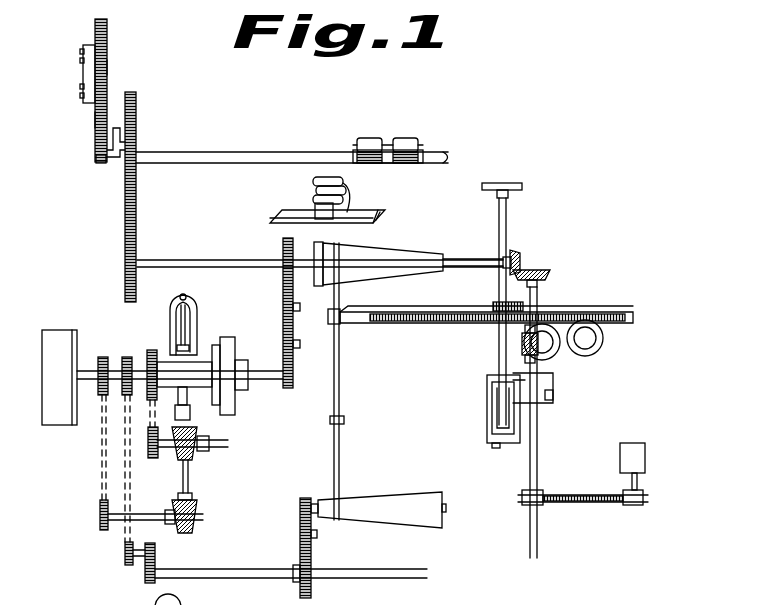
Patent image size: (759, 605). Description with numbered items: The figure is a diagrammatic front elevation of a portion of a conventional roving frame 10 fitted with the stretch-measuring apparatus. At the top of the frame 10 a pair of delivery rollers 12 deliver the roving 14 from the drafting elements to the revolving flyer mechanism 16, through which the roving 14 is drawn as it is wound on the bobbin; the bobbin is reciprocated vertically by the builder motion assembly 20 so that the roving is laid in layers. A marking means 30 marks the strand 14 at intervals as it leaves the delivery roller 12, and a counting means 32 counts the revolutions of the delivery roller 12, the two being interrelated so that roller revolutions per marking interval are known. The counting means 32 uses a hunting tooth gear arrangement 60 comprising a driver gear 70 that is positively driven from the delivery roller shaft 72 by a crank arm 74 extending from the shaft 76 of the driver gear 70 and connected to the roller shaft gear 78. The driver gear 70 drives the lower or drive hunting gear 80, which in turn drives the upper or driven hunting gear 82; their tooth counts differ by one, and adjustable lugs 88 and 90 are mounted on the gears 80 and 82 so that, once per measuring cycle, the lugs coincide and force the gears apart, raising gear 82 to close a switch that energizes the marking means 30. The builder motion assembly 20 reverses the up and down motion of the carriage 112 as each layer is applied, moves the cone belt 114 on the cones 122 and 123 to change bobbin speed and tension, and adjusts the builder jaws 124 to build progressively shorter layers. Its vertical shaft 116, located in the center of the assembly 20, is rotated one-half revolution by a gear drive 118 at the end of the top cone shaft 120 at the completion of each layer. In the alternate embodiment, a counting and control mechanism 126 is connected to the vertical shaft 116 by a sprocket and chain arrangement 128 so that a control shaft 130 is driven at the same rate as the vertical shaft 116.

The roving frame 10 is at (495, 163).
The delivery rollers 12 is at (183, 297).
The roving 14 is at (250, 245).
The flyer mechanism 16 is at (203, 326).
The builder motion assembly 20 is at (569, 372).
The marking means 30 is at (347, 190).
The counting means 32 is at (125, 69).
The hunting tooth gear arrangement 60 is at (77, 76).
The driver gear 70 is at (95, 153).
The delivery roller shaft 72 is at (207, 152).
The crank arm 74 is at (116, 127).
The shaft 76 is at (118, 158).
The roller shaft gear 78 is at (137, 110).
The drive hunting gear 80 is at (95, 122).
The driven hunting gear 82 is at (95, 31).
The adjustable lug 88 is at (85, 91).
The adjustable lug 90 is at (83, 62).
The carriage 112 is at (513, 186).
The cone belt 114 is at (344, 443).
The vertical shaft 116 is at (538, 455).
The gear drive 118 is at (523, 268).
The top cone shaft 120 is at (470, 260).
The cone 122 is at (378, 282).
The cone 123 is at (405, 491).
The builder jaws 124 is at (488, 418).
The counting and control mechanism 126 is at (647, 456).
The sprocket and chain arrangement 128 is at (562, 503).
The control shaft 130 is at (645, 481).